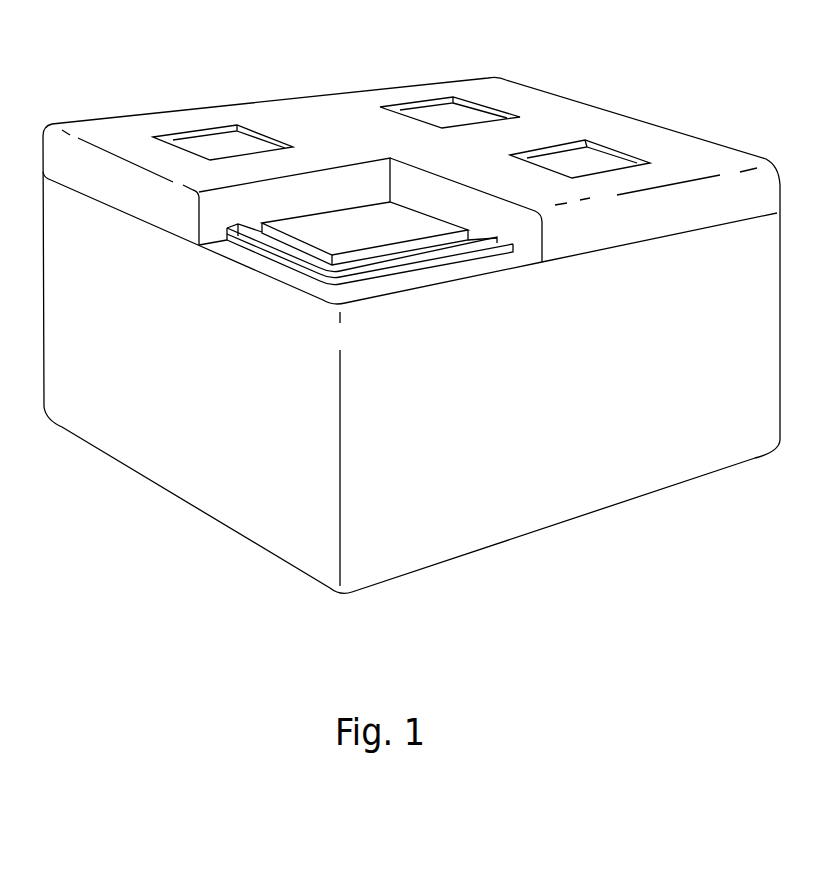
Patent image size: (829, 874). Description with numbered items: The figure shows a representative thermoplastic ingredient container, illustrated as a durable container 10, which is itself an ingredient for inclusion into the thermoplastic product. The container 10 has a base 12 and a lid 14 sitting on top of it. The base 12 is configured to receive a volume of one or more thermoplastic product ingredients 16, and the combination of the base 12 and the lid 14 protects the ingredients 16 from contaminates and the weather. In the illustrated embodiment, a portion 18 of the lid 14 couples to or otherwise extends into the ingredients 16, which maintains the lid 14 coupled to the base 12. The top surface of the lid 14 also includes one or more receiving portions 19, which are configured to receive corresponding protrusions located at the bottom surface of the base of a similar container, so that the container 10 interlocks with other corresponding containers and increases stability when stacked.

The durable container 10 is at (622, 105).
The base 12 is at (548, 384).
The lid 14 is at (473, 162).
The thermoplastic product ingredients 16 is at (338, 223).
The portion of lid 18 is at (257, 215).
The receiving portions 19 is at (453, 116).